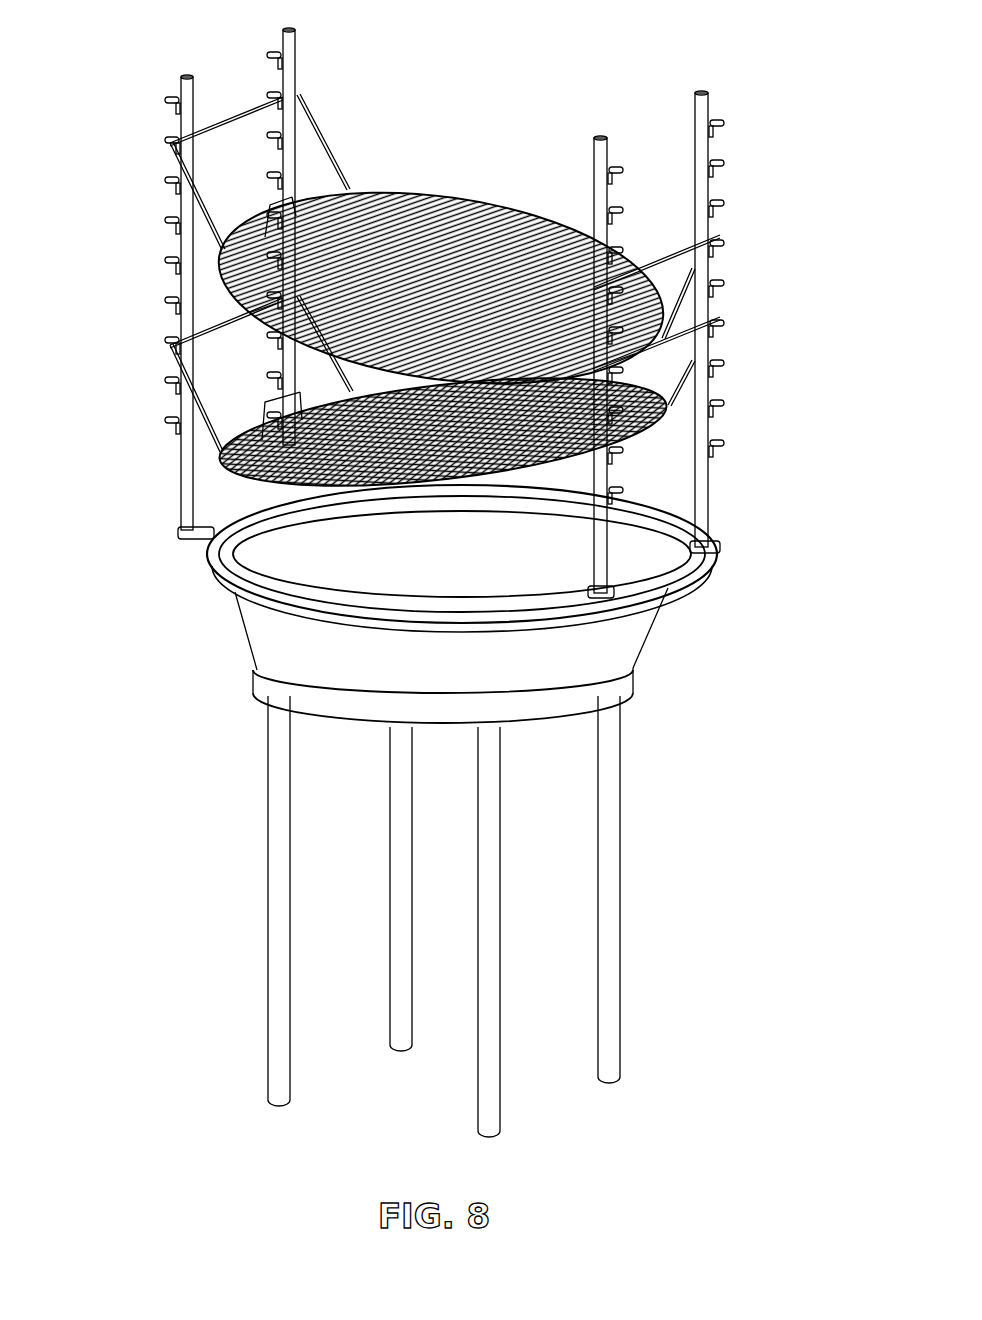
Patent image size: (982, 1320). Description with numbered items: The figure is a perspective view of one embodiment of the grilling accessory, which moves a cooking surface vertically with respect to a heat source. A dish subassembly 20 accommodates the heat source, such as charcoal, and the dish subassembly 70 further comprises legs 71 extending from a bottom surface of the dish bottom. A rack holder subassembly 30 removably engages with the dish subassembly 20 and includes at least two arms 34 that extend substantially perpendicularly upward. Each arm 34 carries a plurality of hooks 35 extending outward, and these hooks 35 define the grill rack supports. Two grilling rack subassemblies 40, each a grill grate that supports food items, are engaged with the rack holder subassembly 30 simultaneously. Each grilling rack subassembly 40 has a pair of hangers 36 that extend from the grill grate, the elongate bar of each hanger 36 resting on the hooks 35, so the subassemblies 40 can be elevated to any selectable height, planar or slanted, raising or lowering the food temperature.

The dish subassembly 20 is at (237, 636).
The rack holder subassembly 30 is at (699, 560).
The arm 34 is at (183, 82).
The hook 35 is at (724, 243).
The hanger 36 is at (228, 106).
The grilling rack subassembly 40 is at (402, 196).
The dish subassembly 70 is at (435, 571).
The leg 71 is at (267, 862).